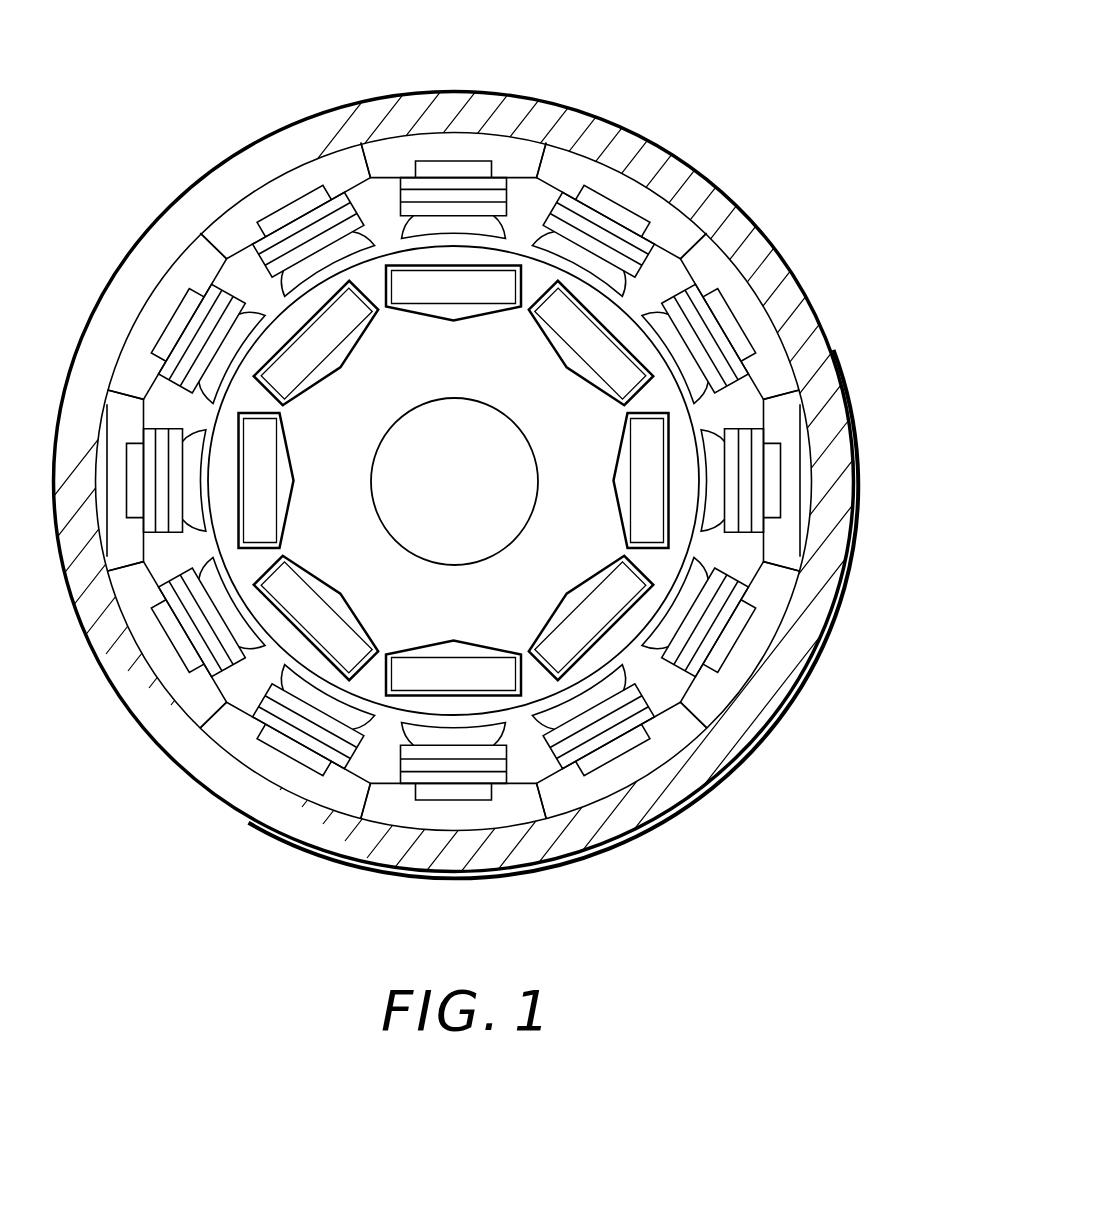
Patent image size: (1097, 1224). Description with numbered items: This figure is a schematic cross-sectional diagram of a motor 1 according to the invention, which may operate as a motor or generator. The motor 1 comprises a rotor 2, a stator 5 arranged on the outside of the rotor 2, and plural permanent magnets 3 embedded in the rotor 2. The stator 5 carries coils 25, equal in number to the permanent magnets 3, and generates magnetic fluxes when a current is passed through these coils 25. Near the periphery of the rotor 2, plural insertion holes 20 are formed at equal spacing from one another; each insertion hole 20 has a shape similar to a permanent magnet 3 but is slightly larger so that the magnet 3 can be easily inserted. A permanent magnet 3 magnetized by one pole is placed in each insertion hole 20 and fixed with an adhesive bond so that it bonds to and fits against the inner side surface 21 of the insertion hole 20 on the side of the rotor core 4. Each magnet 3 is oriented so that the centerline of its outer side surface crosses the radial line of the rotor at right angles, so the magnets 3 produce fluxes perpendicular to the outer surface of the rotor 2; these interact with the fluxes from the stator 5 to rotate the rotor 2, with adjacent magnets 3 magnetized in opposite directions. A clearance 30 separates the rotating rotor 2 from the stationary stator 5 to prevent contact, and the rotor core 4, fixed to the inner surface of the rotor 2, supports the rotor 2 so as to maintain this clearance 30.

The motor 1 is at (636, 114).
The rotor 2 is at (613, 413).
The permanent magnet 3 is at (570, 318).
The rotor core 4 is at (495, 520).
The stator 5 is at (647, 202).
The insertion hole 20 is at (613, 327).
The inner side surface 21 is at (597, 383).
The coil 25 is at (740, 478).
The clearance 30 is at (697, 552).